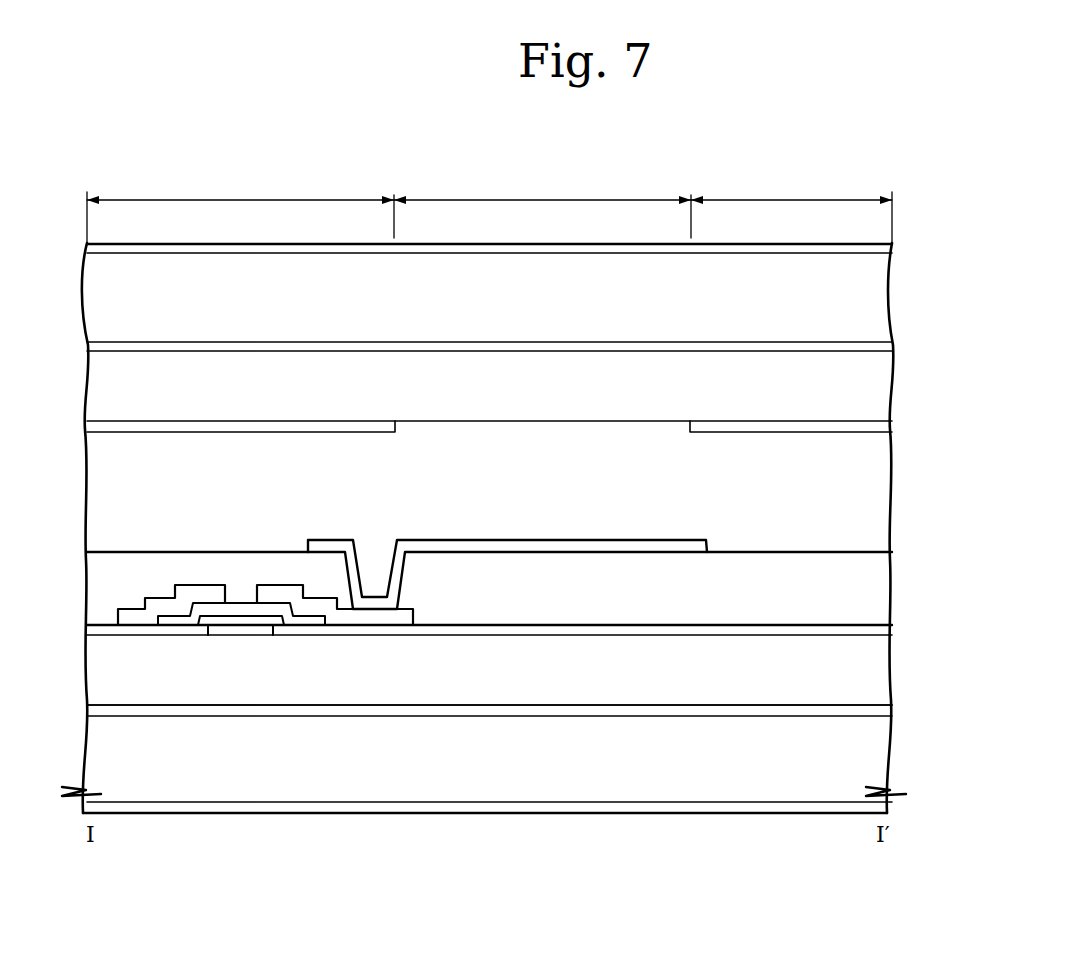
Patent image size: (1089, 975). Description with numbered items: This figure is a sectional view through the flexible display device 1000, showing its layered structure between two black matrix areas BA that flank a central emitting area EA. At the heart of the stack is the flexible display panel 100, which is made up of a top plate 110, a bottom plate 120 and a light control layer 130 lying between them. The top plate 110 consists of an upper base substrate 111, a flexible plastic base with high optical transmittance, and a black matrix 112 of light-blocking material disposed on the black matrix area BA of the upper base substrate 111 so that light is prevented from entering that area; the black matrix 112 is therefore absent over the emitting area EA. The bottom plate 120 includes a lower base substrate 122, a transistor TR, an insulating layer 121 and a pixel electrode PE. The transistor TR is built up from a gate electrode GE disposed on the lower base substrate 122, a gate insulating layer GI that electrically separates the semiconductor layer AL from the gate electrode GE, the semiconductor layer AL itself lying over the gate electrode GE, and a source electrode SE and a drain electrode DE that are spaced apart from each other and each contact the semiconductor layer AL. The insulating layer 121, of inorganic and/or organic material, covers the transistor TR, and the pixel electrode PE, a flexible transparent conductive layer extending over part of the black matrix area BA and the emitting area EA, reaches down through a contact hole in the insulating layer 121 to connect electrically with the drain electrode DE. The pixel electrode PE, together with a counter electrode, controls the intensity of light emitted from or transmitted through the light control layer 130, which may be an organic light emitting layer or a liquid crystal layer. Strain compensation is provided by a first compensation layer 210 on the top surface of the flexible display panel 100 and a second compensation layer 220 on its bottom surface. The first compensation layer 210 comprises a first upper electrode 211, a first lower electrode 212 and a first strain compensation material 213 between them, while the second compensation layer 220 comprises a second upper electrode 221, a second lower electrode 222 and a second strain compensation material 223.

The flexible display device 1000 is at (836, 179).
The flexible display panel 100 is at (585, 539).
The top plate 110 is at (558, 407).
The upper base substrate 111 is at (879, 380).
The black matrix 112 is at (879, 424).
The bottom plate 120 is at (558, 628).
The insulating layer 121 is at (879, 583).
The lower base substrate 122 is at (529, 670).
The light control layer 130 is at (879, 478).
The first compensation layer 210 is at (558, 301).
The first upper electrode 211 is at (879, 248).
The first lower electrode 212 is at (529, 350).
The first strain compensation material 213 is at (879, 296).
The second compensation layer 220 is at (556, 759).
The second upper electrode 221 is at (879, 707).
The second lower electrode 222 is at (527, 807).
The second strain compensation material 223 is at (879, 753).
The transistor TR is at (265, 755).
The source electrode SE is at (138, 619).
The semiconductor layer AL is at (188, 618).
The gate electrode GE is at (245, 630).
The gate insulating layer GI is at (298, 630).
The drain electrode DE is at (348, 619).
The pixel electrode PE is at (480, 545).
The black matrix area BA is at (489, 208).
The emitting area EA is at (542, 206).